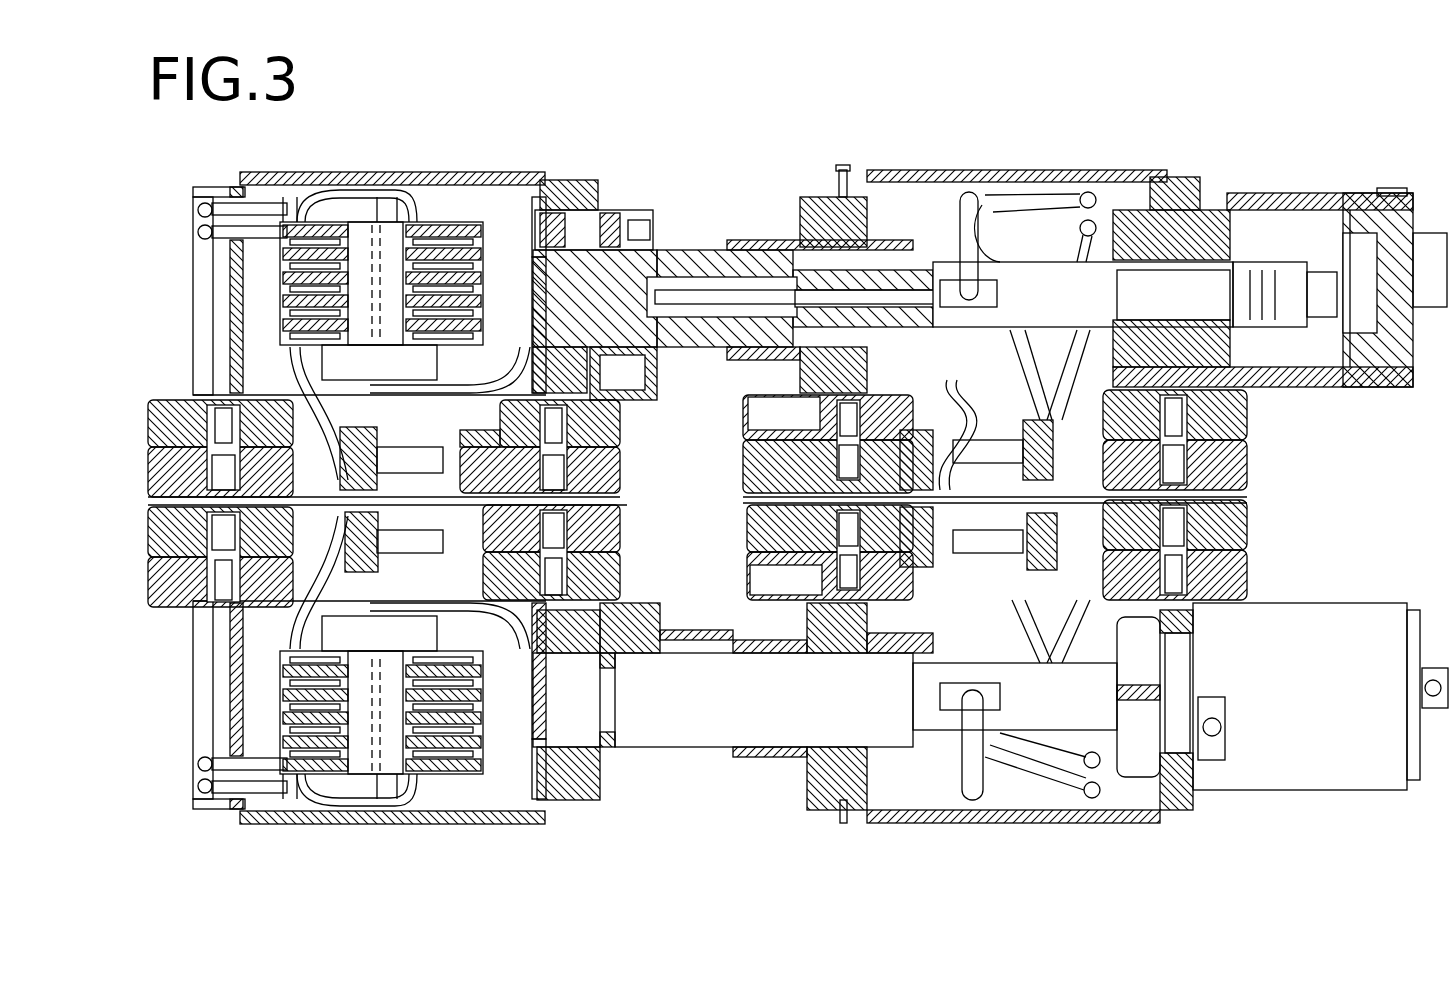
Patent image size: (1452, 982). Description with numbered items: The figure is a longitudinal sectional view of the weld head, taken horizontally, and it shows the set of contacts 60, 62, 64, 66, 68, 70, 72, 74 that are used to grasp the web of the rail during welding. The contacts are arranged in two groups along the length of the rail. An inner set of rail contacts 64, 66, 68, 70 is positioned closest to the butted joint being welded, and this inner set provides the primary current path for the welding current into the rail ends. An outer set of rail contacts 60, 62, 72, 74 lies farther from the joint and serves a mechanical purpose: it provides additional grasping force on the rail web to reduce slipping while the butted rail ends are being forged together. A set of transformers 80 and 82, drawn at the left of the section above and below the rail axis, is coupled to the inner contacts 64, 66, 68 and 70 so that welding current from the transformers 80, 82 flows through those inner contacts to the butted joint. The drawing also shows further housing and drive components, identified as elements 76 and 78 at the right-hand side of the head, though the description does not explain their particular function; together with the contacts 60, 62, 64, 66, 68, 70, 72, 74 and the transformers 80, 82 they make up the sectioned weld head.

The rail contact 60 is at (1250, 457).
The rail contact 62 is at (1250, 522).
The rail contact 64 is at (743, 555).
The rail contact 66 is at (740, 402).
The rail contact 68 is at (627, 520).
The rail contact 70 is at (623, 487).
The rail contact 72 is at (148, 543).
The rail contact 74 is at (148, 477).
The coupling housing 76 is at (1352, 185).
The motor 78 is at (1283, 825).
The transformer 80 is at (389, 157).
The transformer 82 is at (305, 828).